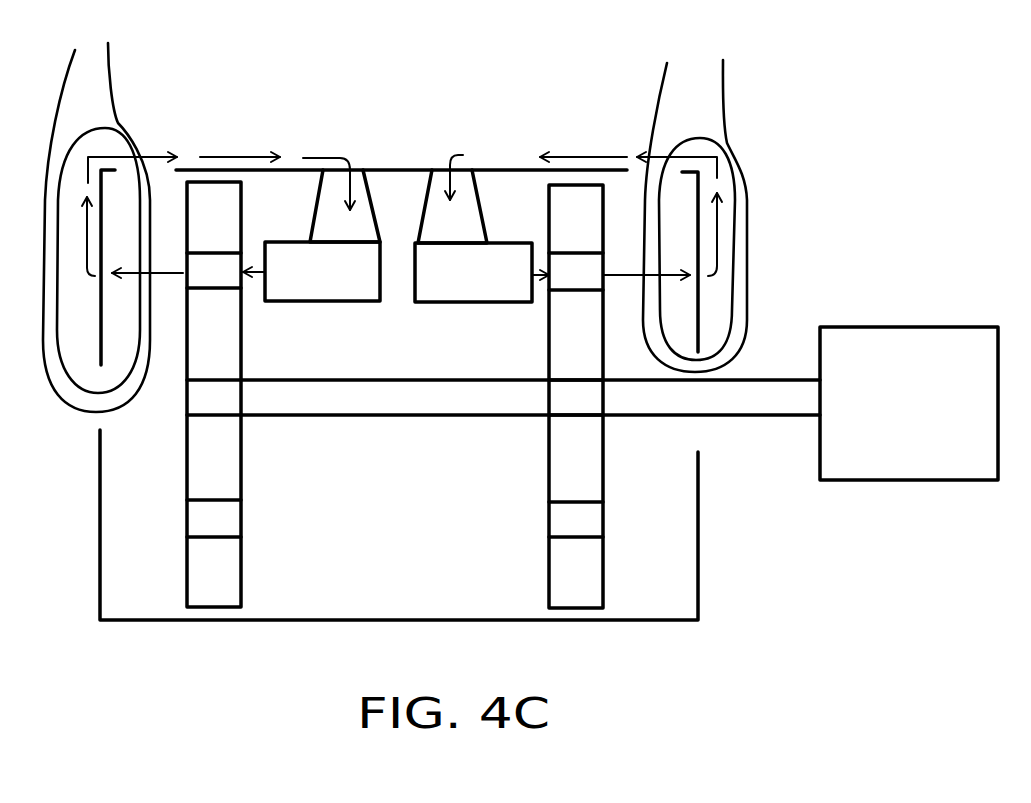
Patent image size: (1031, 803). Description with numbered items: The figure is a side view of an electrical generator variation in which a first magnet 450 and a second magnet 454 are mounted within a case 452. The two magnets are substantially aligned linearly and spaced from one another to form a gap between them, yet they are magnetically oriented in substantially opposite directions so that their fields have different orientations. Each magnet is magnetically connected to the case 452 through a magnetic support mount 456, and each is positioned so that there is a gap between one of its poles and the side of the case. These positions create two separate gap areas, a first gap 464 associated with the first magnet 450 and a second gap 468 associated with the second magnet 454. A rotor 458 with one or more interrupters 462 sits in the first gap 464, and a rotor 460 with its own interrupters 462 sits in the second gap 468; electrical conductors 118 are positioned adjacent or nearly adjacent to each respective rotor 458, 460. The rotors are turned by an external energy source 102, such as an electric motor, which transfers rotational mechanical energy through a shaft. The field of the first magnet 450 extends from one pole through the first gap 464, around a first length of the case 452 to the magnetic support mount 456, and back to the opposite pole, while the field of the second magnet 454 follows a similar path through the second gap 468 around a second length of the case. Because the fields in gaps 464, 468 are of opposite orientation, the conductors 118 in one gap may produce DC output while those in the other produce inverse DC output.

The external energy source 102 is at (897, 327).
The electrical conductor 118 is at (112, 77).
The first magnet 450 is at (322, 294).
The case 452 is at (698, 503).
The second magnet 454 is at (473, 295).
The magnetic support mount 456 is at (425, 205).
The rotor 458 is at (241, 455).
The rotor 460 is at (603, 458).
The interrupters 462 is at (248, 284).
The first gap 464 is at (173, 190).
The second gap 468 is at (620, 200).